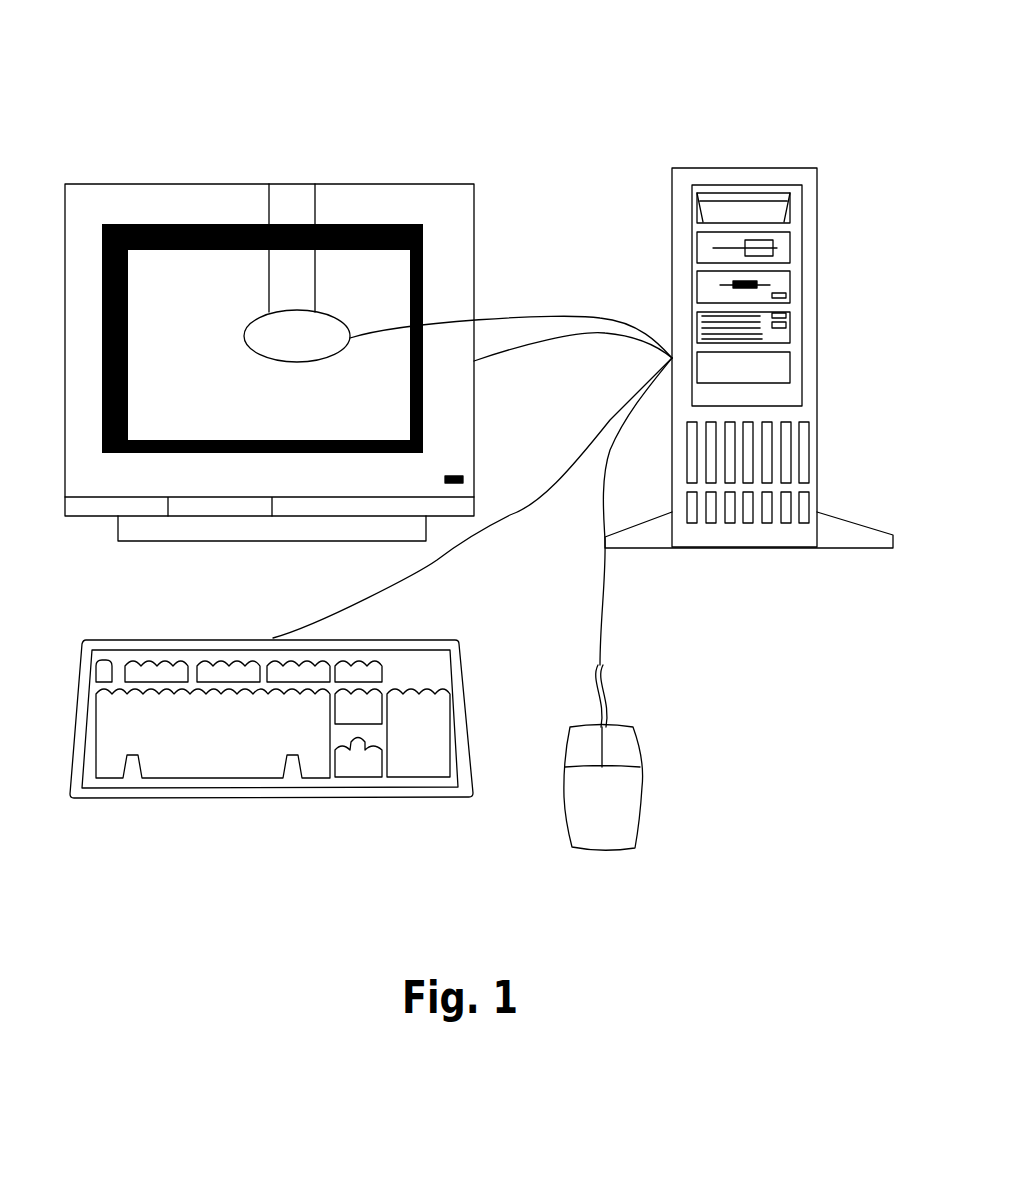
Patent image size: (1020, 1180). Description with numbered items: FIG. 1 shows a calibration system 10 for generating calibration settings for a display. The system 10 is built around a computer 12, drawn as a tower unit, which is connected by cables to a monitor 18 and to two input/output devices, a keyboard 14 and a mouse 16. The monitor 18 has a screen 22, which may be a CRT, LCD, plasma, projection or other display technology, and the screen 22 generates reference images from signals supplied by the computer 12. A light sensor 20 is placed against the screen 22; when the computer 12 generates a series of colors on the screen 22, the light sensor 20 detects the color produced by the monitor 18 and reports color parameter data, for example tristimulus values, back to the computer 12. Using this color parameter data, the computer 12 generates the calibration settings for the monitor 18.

The calibration system 10 is at (602, 120).
The computer 12 is at (787, 168).
The keyboard 14 is at (178, 640).
The mouse 16 is at (643, 810).
The monitor 18 is at (380, 183).
The light sensor 20 is at (248, 322).
The screen 22 is at (226, 432).